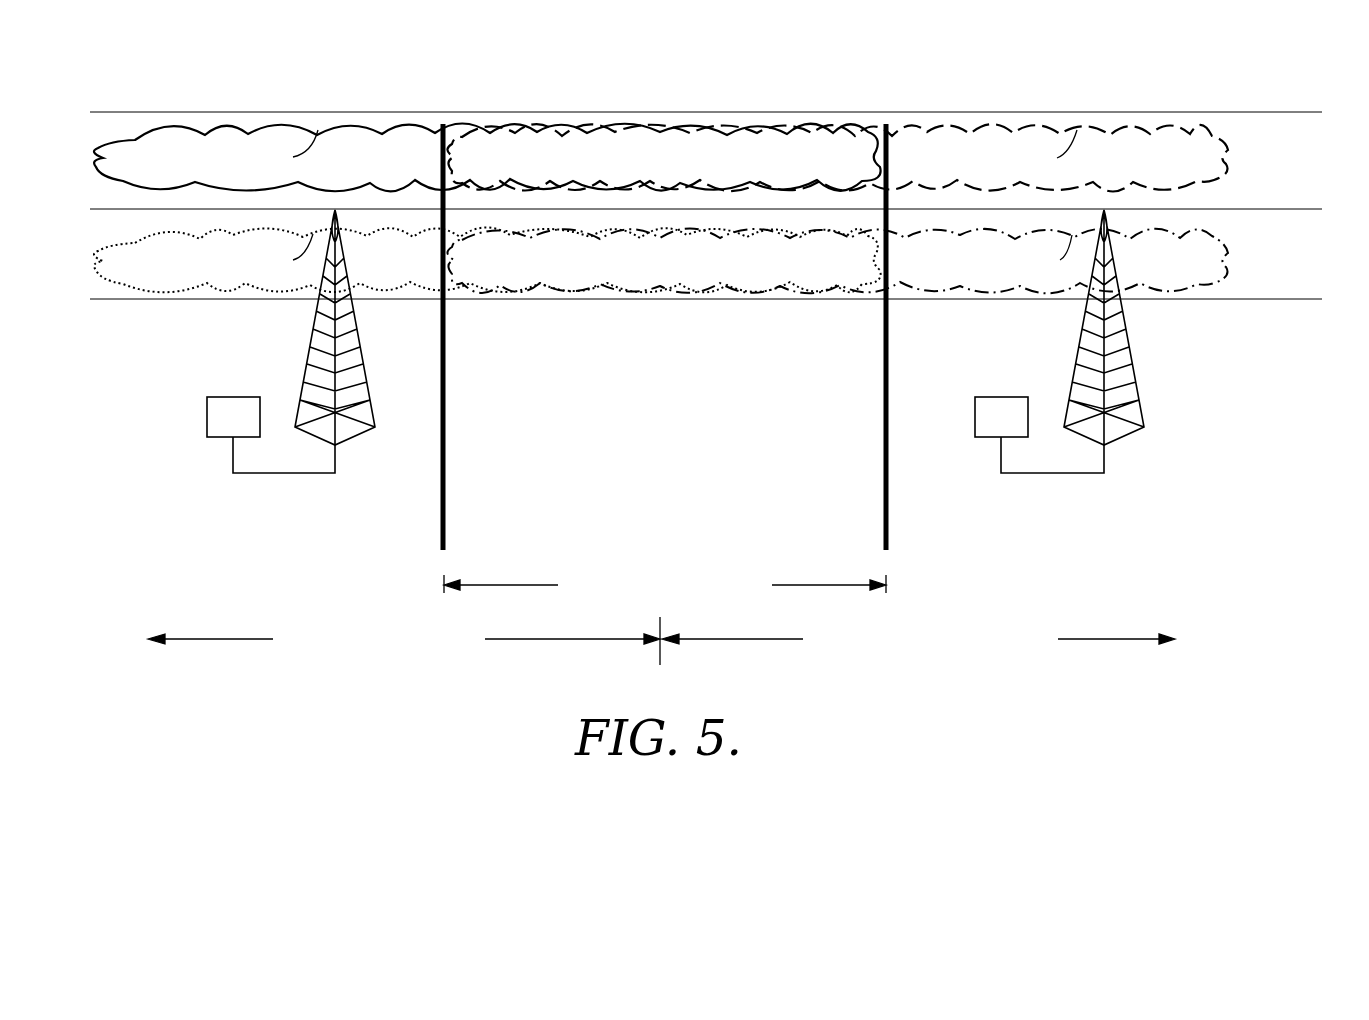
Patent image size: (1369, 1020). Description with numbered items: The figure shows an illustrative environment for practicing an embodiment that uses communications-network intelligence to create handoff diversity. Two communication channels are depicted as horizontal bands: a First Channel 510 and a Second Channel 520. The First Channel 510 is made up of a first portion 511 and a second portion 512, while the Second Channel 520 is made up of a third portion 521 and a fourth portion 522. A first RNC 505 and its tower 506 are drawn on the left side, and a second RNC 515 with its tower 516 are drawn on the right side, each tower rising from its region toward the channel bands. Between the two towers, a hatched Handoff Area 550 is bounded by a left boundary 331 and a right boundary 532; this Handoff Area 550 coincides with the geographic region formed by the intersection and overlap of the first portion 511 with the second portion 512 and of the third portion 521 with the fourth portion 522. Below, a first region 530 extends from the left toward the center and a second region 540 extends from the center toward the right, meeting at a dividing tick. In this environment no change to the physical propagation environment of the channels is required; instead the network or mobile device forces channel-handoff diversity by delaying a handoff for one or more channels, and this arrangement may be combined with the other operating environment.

The First Channel 510 is at (1338, 147).
The Second Channel 520 is at (1345, 295).
The Portion 1A 511 is at (487, 158).
The Portion 1B 512 is at (837, 158).
The Portion 2A 521 is at (487, 259).
The Portion 2B 522 is at (837, 263).
The RNC 505 is at (232, 397).
The tower 506 is at (307, 347).
The RNC 515 is at (993, 397).
The tower 516 is at (1128, 348).
The first region boundary 331 is at (440, 508).
The second region boundary 532 is at (876, 513).
The Handoff Area 550 is at (665, 371).
The first region 530 is at (404, 647).
The second region 540 is at (918, 650).